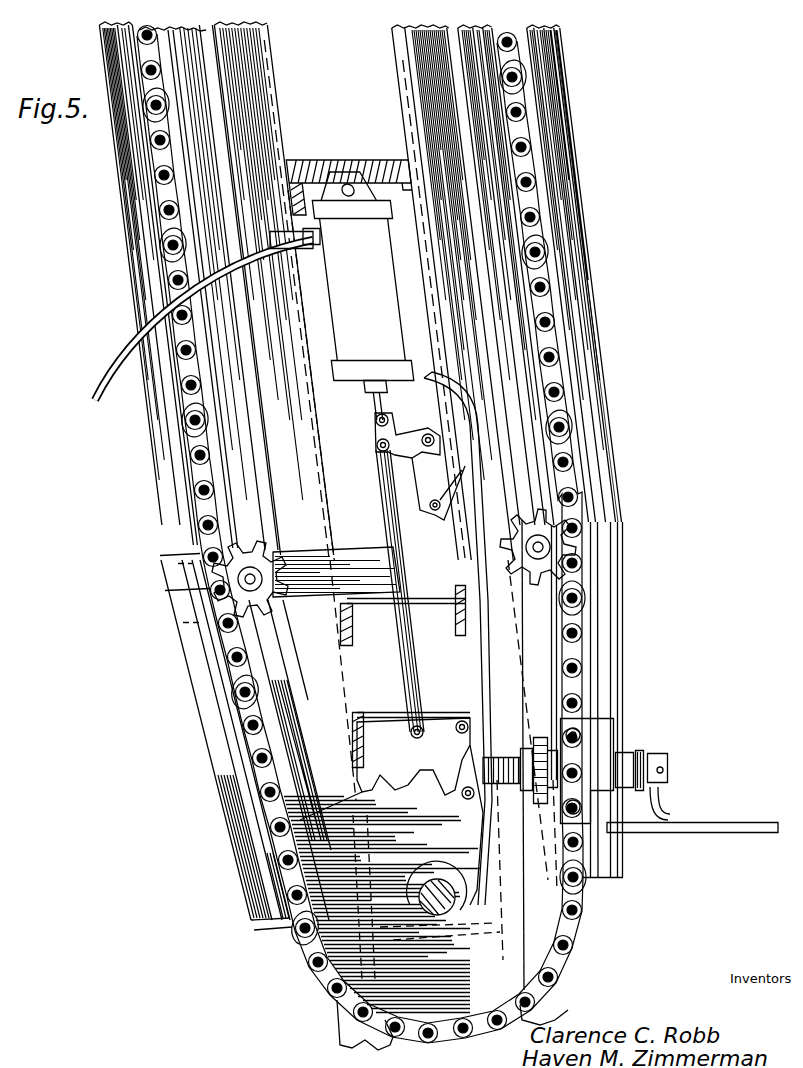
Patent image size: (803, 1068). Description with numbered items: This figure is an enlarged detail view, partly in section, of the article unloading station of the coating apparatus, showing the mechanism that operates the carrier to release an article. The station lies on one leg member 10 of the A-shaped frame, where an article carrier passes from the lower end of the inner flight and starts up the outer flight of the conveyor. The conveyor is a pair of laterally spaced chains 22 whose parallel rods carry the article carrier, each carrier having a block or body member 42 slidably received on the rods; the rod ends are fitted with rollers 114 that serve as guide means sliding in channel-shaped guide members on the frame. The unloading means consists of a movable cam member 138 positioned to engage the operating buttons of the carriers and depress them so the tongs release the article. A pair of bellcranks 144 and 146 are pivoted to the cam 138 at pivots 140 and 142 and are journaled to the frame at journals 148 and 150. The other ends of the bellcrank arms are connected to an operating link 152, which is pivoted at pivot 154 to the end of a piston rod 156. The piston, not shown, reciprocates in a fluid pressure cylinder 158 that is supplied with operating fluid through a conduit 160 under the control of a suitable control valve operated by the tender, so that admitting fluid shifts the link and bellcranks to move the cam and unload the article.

The leg member 10 is at (610, 303).
The chain 22 is at (560, 443).
The block or body member 42 is at (598, 757).
The roller 114 is at (552, 246).
The movable cam member 138 is at (482, 645).
The pivot 140 is at (460, 796).
The pivot 142 is at (430, 506).
The bellcrank 144 is at (410, 715).
The bellcrank 146 is at (409, 440).
The journal 148 is at (462, 722).
The journal 150 is at (431, 432).
The operating link 152 is at (392, 583).
The pivot 154 is at (376, 424).
The piston rod 156 is at (378, 408).
The fluid pressure cylinder 158 is at (361, 276).
The conduit 160 is at (264, 245).